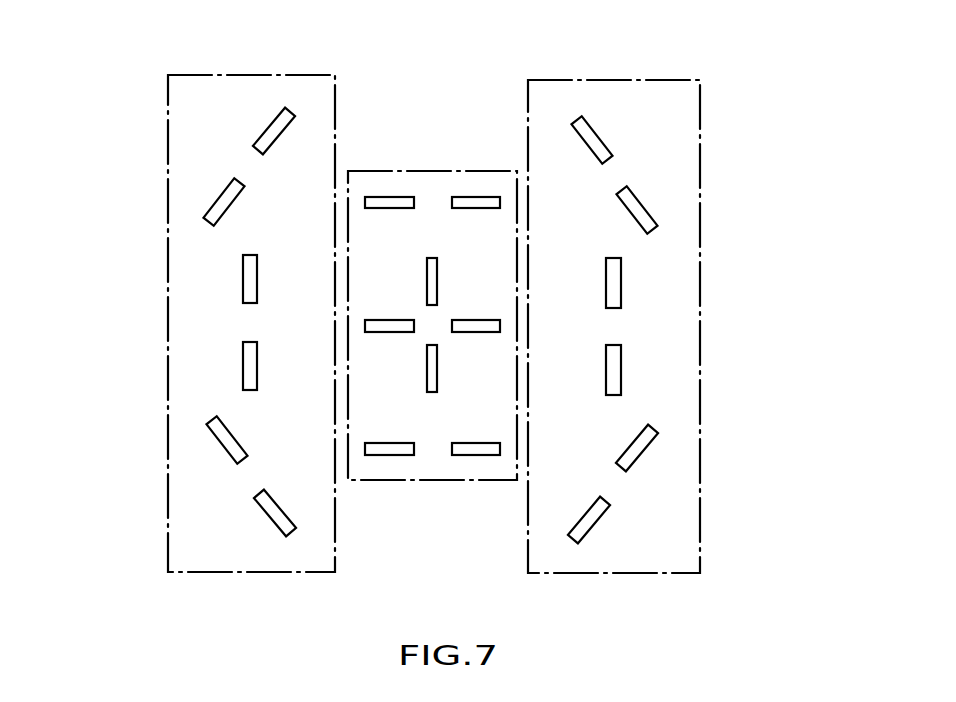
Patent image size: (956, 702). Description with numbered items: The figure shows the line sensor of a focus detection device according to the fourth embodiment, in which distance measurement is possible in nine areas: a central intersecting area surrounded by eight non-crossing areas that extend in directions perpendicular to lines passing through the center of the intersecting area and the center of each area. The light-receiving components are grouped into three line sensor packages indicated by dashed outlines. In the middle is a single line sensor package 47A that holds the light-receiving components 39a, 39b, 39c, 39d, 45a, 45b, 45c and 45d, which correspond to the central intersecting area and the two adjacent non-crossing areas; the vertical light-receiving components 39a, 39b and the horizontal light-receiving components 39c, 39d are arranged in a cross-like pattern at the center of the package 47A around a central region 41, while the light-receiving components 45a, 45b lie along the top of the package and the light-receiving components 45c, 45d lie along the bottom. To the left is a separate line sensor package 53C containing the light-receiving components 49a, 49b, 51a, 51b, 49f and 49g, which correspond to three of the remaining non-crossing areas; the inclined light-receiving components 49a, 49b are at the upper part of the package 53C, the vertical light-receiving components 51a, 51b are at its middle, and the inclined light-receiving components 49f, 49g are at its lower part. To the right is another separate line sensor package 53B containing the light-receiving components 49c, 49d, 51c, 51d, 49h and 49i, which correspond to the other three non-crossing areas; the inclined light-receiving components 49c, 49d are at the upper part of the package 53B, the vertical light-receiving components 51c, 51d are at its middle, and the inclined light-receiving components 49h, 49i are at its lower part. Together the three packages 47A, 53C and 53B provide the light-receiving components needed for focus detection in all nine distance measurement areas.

The line sensor package 53C is at (187, 62).
The line sensor package 53B is at (634, 66).
The line sensor package 47A is at (426, 157).
The light-receiving component 49a is at (268, 126).
The light-receiving component 49b is at (222, 203).
The light-receiving component 49c is at (600, 142).
The light-receiving component 49d is at (640, 210).
The light-receiving component 49f is at (222, 445).
The light-receiving component 49g is at (272, 512).
The light-receiving component 49h is at (648, 440).
The light-receiving component 49i is at (592, 518).
The light-receiving component 51a is at (248, 280).
The light-receiving component 51b is at (248, 365).
The light-receiving component 51c is at (615, 283).
The light-receiving component 51d is at (615, 365).
The light-receiving component 45a is at (388, 197).
The light-receiving component 45b is at (485, 197).
The light-receiving component 45c is at (392, 452).
The light-receiving component 45d is at (475, 450).
The light-receiving component 39a is at (432, 272).
The light-receiving component 39b is at (435, 366).
The light-receiving component 39c is at (385, 320).
The light-receiving component 39d is at (470, 324).
The central region of connector 41 is at (403, 357).